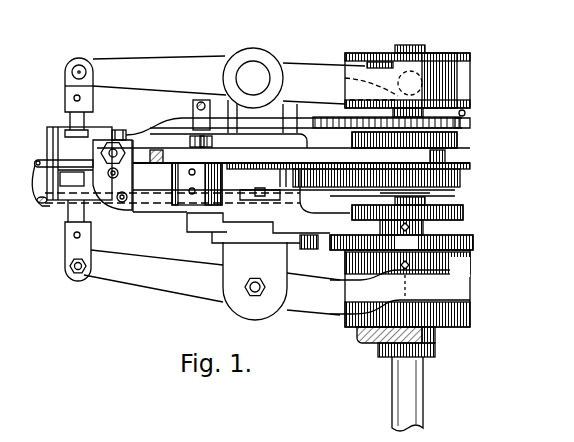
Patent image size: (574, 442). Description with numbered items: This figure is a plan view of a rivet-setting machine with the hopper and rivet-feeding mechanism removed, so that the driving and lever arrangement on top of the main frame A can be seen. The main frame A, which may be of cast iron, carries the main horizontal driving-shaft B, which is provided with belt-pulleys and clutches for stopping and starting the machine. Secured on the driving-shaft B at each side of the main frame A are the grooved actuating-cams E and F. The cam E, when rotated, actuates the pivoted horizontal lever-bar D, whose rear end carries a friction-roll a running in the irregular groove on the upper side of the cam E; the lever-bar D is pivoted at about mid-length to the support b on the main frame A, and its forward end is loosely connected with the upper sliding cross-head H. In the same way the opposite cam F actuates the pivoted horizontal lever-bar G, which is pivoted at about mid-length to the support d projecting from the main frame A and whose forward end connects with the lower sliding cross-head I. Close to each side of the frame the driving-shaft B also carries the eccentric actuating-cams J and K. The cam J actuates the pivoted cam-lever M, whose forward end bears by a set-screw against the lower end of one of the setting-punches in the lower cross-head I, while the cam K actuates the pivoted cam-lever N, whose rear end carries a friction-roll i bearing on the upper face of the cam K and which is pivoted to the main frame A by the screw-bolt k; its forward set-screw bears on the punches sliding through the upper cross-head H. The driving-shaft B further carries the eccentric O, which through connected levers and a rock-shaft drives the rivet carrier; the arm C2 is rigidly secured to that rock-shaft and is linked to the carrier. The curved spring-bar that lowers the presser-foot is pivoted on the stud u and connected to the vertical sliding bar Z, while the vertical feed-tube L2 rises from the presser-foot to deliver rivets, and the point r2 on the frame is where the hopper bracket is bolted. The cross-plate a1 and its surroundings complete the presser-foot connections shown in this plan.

The pivoted horizontal lever-bar D is at (231, 92).
The grooved actuating-cam E is at (408, 81).
The friction-roll a is at (410, 83).
The eccentric actuating-cam K is at (294, 134).
The friction-roll i is at (452, 150).
The bearing-block or projecting stud u is at (201, 115).
The screw-bolt k is at (200, 142).
The support b is at (227, 115).
The pivoted cam-lever N is at (297, 156).
The main frame A is at (296, 265).
The point r2 is at (197, 184).
The eccentric actuating-cam J is at (381, 196).
The pivoted cam-lever M is at (445, 195).
The eccentric O is at (401, 236).
The grooved actuating-cam F is at (400, 288).
The main horizontal driving-shaft B is at (407, 394).
The support d is at (255, 281).
The pivoted horizontal lever-bar G is at (202, 268).
The upper sliding cross-head H is at (79, 174).
The lower sliding cross-head I is at (66, 198).
The vertical sliding bar Z is at (120, 138).
The nut a1 is at (112, 175).
The vertical feed-tube L2 is at (121, 173).
The arm C2 is at (124, 203).